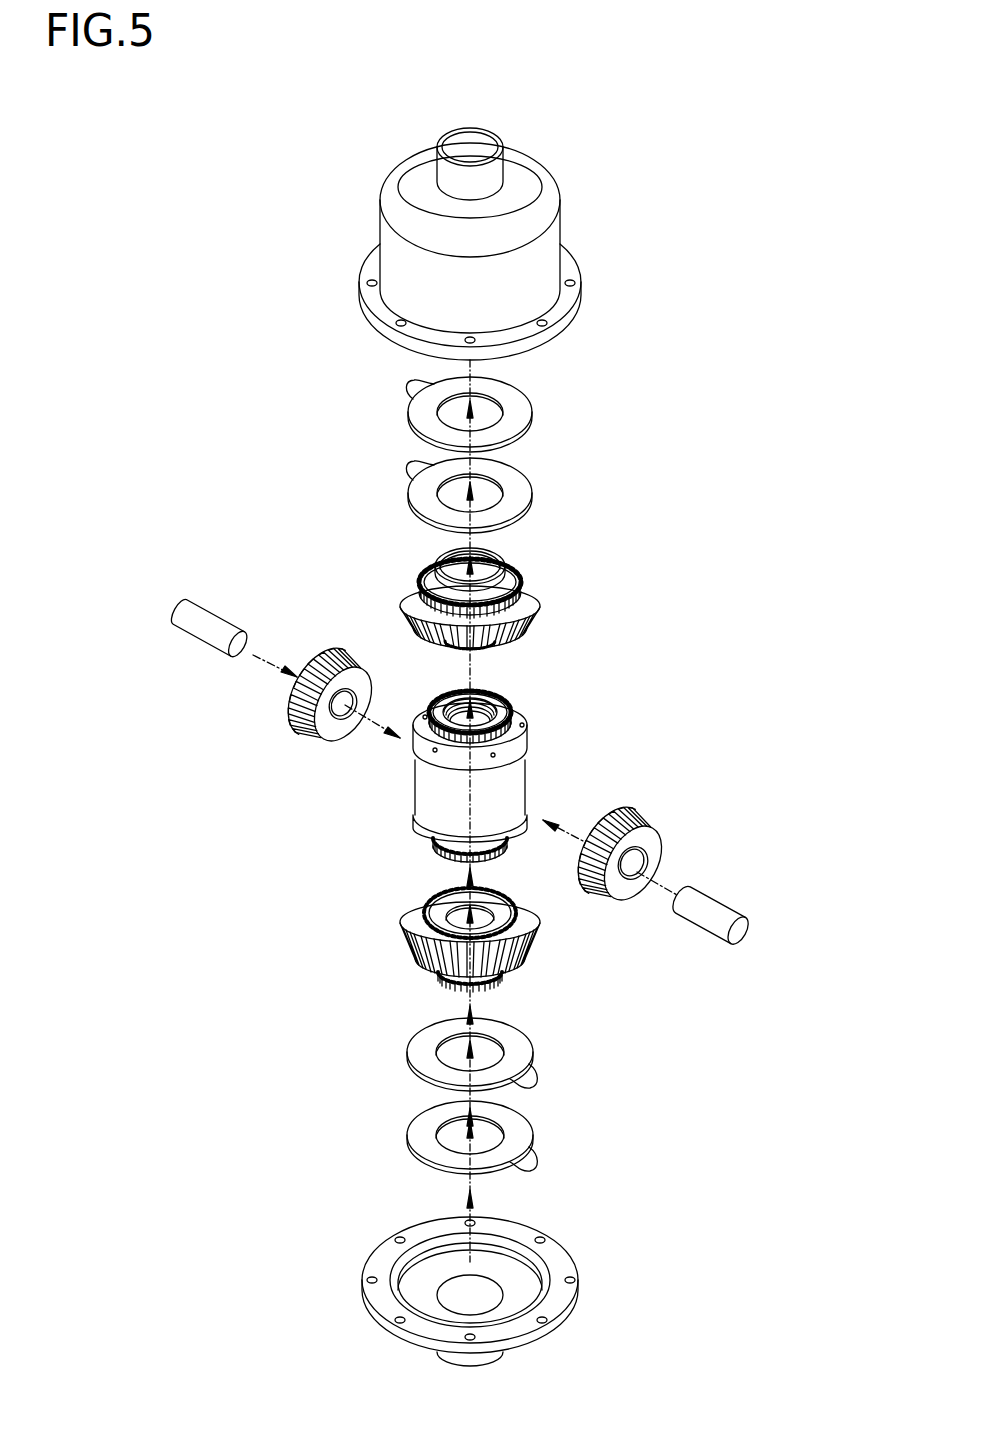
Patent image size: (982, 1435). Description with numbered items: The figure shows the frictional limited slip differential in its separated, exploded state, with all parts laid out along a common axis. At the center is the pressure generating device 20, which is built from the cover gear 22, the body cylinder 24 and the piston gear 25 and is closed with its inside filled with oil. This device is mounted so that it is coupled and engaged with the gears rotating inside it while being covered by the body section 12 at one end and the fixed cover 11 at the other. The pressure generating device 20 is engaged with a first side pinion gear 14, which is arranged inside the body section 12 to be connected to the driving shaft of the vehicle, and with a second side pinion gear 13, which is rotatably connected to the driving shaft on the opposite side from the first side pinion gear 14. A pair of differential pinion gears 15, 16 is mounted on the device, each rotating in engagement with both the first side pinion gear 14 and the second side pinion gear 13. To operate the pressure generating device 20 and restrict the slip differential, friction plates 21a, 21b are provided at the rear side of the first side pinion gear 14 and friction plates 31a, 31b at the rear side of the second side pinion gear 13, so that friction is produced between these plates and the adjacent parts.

The fixed cover 11 is at (530, 172).
The body section 12 is at (562, 1267).
The second side pinion gear 13 is at (533, 585).
The first side pinion gear 14 is at (533, 945).
The differential pinion gear 15 is at (352, 653).
The differential pinion gear 16 is at (653, 847).
The pressure generating device 20 is at (499, 770).
The friction plate 21a is at (515, 1052).
The friction plate 21b is at (515, 1127).
The cover gear 22 is at (503, 686).
The body cylinder 24 is at (518, 786).
The piston gear 25 is at (433, 847).
The friction plate 31a is at (523, 405).
The friction plate 31b is at (523, 486).